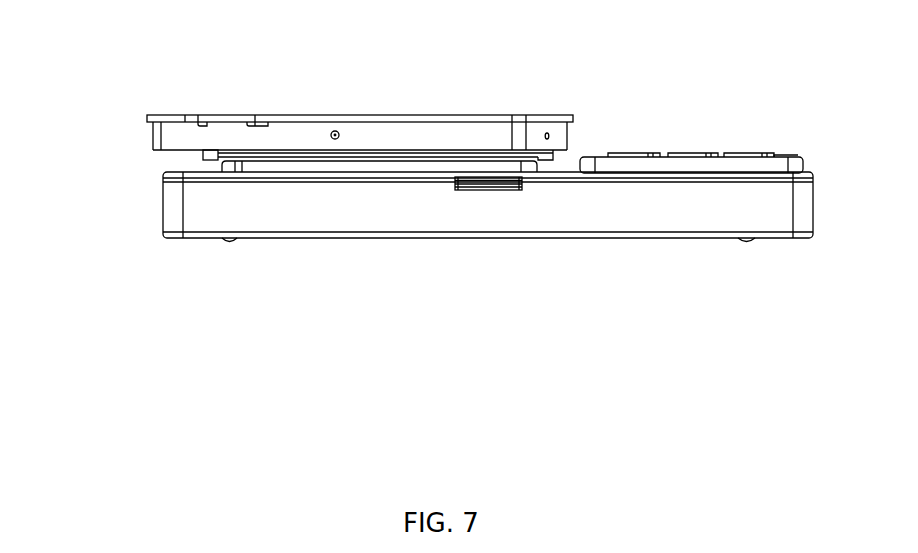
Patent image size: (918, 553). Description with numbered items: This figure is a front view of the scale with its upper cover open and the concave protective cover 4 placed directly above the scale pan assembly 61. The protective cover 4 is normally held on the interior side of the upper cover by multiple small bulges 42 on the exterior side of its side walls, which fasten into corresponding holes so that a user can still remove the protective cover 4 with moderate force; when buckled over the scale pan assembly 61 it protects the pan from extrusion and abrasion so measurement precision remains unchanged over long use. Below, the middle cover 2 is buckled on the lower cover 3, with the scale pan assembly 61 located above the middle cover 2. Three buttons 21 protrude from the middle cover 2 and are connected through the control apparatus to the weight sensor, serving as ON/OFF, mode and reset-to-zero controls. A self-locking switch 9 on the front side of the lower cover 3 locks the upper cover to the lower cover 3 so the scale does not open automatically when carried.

The middle cover 2 is at (602, 177).
The lower cover 3 is at (293, 213).
The protective cover 4 is at (177, 135).
The self-locking switch 9 is at (495, 190).
The buttons 21 is at (750, 155).
The bulges 42 is at (340, 132).
The scale pan assembly 61 is at (203, 155).